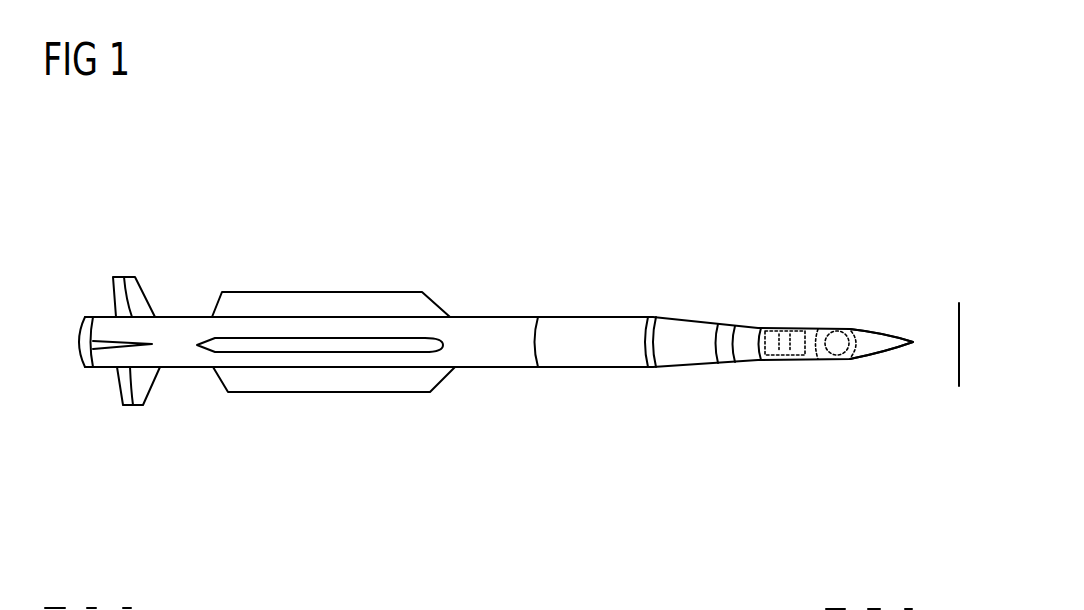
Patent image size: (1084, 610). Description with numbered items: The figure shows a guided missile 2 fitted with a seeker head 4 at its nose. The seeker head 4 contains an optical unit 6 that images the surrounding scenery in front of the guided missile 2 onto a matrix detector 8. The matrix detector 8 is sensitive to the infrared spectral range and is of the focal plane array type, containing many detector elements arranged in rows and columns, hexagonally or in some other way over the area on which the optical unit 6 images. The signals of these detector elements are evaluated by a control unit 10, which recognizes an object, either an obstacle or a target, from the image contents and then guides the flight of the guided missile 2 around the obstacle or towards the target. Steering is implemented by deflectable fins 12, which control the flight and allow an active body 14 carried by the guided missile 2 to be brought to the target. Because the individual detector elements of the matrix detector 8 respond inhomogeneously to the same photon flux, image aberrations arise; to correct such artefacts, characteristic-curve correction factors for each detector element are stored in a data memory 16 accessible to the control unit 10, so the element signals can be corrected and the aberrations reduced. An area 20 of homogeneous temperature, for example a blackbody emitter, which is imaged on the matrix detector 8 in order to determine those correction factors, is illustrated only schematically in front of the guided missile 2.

The guided missile 2 is at (388, 283).
The seeker head 4 is at (888, 342).
The optical unit 6 is at (858, 329).
The matrix detector 8 is at (823, 329).
The control unit 10 is at (797, 333).
The deflectable fins 12 is at (119, 307).
The active body 14 is at (613, 322).
The data memory 16 is at (772, 329).
The area of homogeneous temperature 20 is at (957, 367).